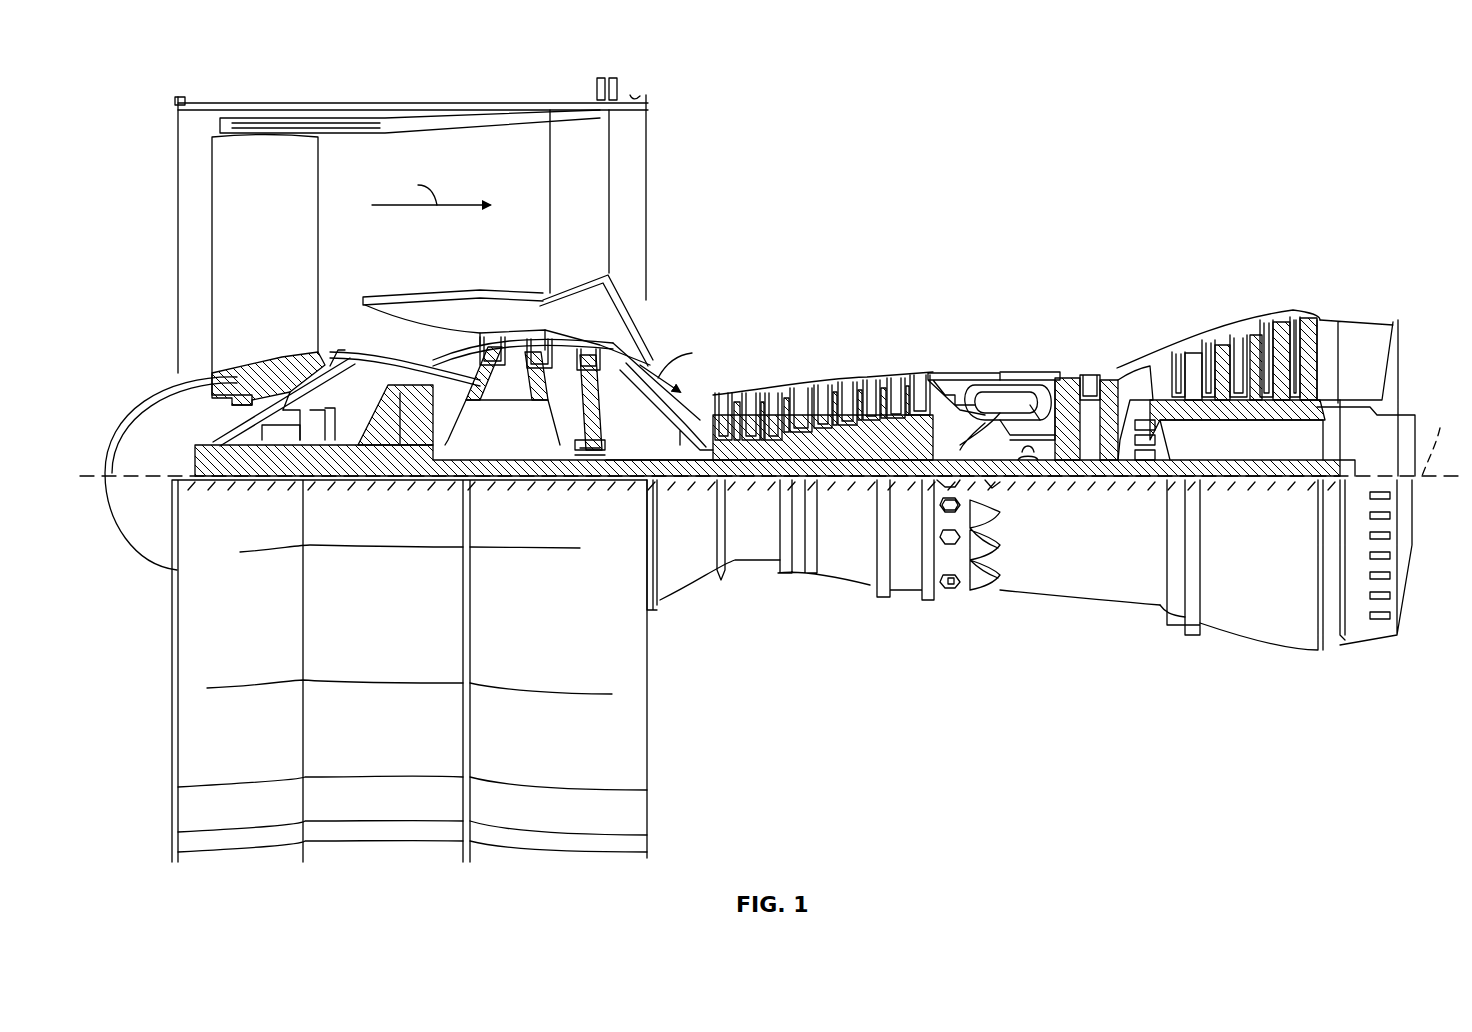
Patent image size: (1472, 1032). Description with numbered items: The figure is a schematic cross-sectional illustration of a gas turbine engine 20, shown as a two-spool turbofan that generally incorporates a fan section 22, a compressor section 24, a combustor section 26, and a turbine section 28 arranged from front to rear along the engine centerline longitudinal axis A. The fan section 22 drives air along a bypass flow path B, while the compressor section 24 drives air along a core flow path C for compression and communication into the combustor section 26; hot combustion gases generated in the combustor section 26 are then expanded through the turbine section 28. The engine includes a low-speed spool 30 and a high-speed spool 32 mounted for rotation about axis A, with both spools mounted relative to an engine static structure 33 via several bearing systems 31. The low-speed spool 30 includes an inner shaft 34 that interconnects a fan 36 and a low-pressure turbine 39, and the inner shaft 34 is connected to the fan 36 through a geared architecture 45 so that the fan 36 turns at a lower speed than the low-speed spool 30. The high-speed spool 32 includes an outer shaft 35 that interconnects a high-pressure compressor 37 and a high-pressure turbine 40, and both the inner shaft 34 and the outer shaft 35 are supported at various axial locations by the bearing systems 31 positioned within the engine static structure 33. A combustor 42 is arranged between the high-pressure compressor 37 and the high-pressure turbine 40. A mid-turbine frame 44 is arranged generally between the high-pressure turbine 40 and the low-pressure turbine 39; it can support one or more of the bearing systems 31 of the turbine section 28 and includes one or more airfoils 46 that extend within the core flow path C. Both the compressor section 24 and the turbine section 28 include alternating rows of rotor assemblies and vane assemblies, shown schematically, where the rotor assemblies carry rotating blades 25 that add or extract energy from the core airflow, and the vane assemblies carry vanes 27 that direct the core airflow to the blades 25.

The gas turbine engine 20 is at (1220, 142).
The fan section 22 is at (398, 64).
The compressor section 24 is at (838, 332).
The rotating blades 25 is at (440, 463).
The combustor section 26 is at (1003, 332).
The vanes 27 is at (517, 350).
The turbine section 28 is at (1283, 240).
The low-speed spool 30 is at (870, 480).
The bearing systems 31 is at (277, 440).
The high-speed spool 32 is at (933, 390).
The engine static structure 33 is at (908, 596).
The inner shaft 34 is at (662, 477).
The outer shaft 35 is at (1033, 452).
The fan 36 is at (290, 229).
The high-pressure compressor 37 is at (823, 440).
The low-pressure turbine 39 is at (1253, 330).
The high-pressure turbine 40 is at (1088, 368).
The combustor 42 is at (1010, 393).
The mid-turbine frame 44 is at (1136, 352).
The geared architecture 45 is at (413, 440).
The airfoils 46 is at (1105, 352).